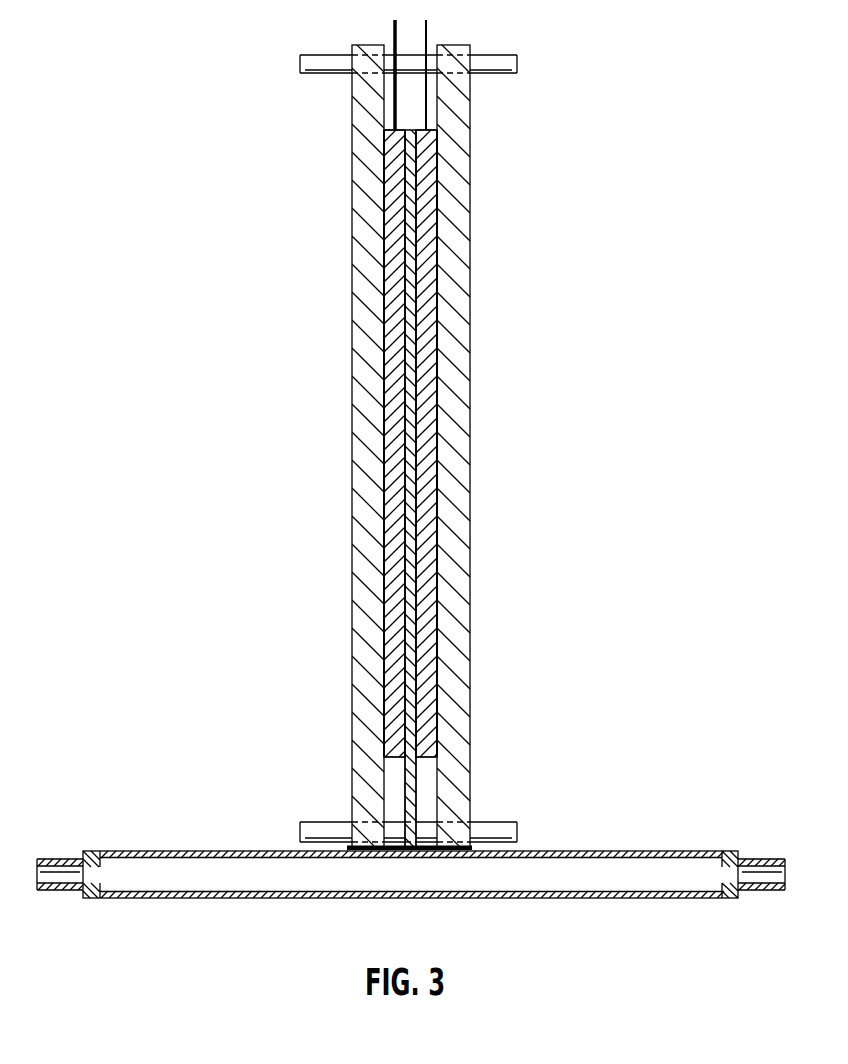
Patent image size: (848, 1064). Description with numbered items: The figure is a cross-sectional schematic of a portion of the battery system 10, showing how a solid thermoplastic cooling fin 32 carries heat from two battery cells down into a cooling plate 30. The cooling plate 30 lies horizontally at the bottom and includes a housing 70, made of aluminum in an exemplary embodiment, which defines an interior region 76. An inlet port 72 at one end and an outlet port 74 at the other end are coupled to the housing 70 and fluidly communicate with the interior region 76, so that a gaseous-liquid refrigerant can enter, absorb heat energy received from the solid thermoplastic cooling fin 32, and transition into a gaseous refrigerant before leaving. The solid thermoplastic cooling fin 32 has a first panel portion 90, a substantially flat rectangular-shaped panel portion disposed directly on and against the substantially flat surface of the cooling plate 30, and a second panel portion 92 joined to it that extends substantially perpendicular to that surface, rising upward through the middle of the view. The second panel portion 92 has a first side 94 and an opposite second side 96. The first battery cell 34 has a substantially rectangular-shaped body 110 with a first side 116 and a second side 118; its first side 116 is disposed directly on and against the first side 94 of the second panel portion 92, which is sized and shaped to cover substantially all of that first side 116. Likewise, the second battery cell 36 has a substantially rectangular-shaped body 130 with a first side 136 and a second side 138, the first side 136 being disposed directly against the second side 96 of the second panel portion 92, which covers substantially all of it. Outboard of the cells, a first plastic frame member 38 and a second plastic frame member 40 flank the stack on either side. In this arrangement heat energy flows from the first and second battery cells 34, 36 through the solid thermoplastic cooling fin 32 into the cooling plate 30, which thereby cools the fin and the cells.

The battery system 10 is at (664, 191).
The cooling plate 30 is at (640, 851).
The solid thermoplastic cooling fin 32 is at (415, 778).
The first battery cell 34 is at (385, 482).
The second battery cell 36 is at (434, 477).
The first plastic frame member 38 is at (363, 320).
The second plastic frame member 40 is at (450, 322).
The housing 70 is at (152, 851).
The inlet port 72 is at (58, 859).
The outlet port 74 is at (750, 860).
The interior region 76 is at (588, 880).
The first panel portion 90 is at (480, 848).
The second panel portion 92 is at (412, 797).
The first side 94 is at (403, 683).
The second side 96 is at (420, 688).
The substantially rectangular-shaped body 110 is at (395, 525).
The first side 116 is at (407, 565).
The second side 118 is at (380, 602).
The substantially rectangular-shaped body 130 is at (428, 527).
The first side 136 is at (418, 577).
The second side 138 is at (443, 603).